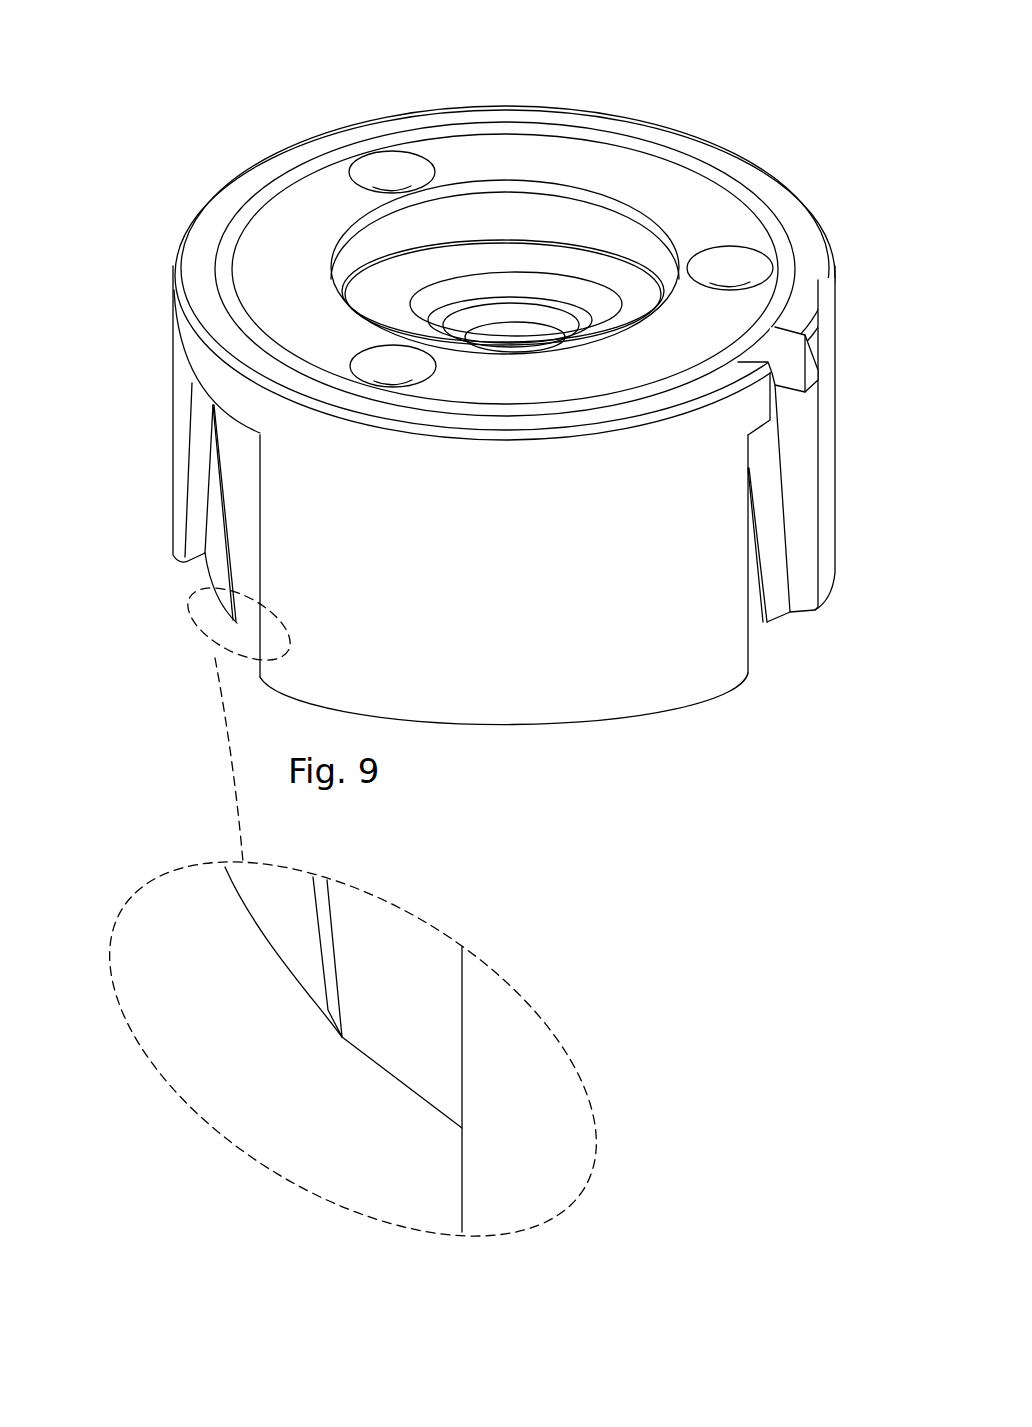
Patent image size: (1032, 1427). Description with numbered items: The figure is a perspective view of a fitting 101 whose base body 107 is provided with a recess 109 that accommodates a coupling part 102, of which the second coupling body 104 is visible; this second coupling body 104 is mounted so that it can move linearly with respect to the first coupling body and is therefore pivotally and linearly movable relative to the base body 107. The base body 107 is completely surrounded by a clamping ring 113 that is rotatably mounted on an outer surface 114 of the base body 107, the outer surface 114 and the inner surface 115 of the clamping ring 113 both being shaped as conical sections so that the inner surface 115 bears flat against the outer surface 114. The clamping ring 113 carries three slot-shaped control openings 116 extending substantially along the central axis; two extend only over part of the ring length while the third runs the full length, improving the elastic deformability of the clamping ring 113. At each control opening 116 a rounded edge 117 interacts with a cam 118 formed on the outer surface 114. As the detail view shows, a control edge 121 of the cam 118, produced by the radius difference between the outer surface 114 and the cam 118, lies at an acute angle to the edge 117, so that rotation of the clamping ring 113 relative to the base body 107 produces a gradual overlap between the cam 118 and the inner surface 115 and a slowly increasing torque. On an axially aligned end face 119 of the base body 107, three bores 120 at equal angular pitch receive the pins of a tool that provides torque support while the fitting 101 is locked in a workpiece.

The fitting 101 is at (229, 79).
The coupling part 102 is at (588, 272).
The second coupling body 104 is at (515, 283).
The base body 107 is at (273, 256).
The recess 109 is at (357, 260).
The clamping ring 113 is at (778, 190).
The outer surface 114 is at (215, 550).
The inner surface 115 is at (776, 460).
The control opening 116 is at (758, 455).
The edge 117 is at (203, 500).
The cam 118 is at (770, 553).
The end face 119 is at (476, 147).
The bore 120 is at (407, 168).
The control edge 121 is at (213, 403).